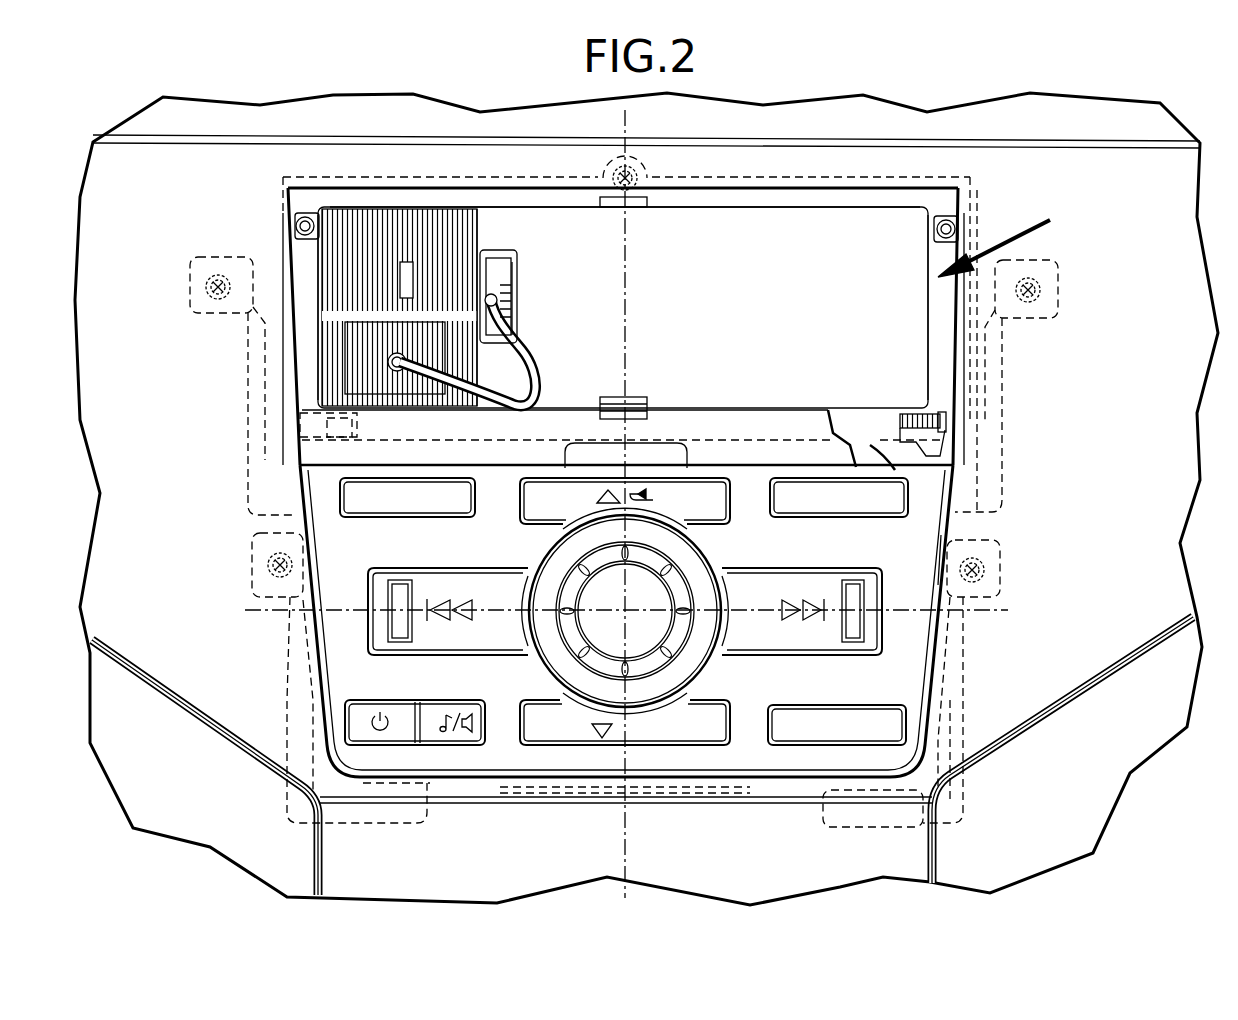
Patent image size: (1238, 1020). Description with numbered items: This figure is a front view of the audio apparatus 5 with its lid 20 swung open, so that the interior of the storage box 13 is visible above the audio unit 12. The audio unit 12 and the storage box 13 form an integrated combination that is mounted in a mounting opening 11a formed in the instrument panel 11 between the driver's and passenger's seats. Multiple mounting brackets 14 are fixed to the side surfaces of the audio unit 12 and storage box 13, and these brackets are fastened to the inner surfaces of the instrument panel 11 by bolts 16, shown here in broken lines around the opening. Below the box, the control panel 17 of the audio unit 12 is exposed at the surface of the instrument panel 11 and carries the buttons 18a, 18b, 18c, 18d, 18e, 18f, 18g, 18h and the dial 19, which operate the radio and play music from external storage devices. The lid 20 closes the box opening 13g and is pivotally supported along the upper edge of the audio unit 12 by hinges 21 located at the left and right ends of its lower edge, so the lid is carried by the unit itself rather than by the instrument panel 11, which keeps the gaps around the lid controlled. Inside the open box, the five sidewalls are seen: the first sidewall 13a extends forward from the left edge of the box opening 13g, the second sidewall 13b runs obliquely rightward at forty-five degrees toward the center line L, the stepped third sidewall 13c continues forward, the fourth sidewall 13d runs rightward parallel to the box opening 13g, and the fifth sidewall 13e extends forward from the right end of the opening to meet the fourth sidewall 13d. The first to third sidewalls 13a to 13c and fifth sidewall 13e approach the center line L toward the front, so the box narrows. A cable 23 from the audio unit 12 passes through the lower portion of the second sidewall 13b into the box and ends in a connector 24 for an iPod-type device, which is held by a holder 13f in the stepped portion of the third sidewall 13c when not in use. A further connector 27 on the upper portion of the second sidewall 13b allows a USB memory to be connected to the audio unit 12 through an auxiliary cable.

The display device 5 is at (1009, 237).
The instrument panel 11 is at (1048, 165).
The mounting opening 11a is at (945, 558).
The audio unit 12 is at (936, 627).
The storage box 13 is at (958, 354).
The first sidewall 13a is at (327, 293).
The second sidewall 13b is at (390, 222).
The third sidewall 13c is at (483, 237).
The fourth sidewall 13d is at (742, 289).
The fifth sidewall 13e is at (928, 310).
The holder 13f is at (516, 305).
The box opening 13g is at (773, 210).
The mounting brackets 14 is at (598, 173).
The bolts 16 is at (652, 172).
The control panel 17 is at (772, 556).
The button 18a is at (403, 506).
The button 18b is at (551, 508).
The button 18c is at (854, 512).
The button 18d is at (471, 578).
The button 18e is at (778, 578).
The button 18f is at (440, 705).
The button 18g is at (710, 700).
The button 18h is at (815, 705).
The dial 19 is at (570, 650).
The lid 20 is at (748, 410).
The hinges 21 is at (918, 411).
The cable 23 is at (532, 390).
The connector 24 is at (498, 272).
The connector 27 is at (413, 283).
The center line L is at (625, 330).